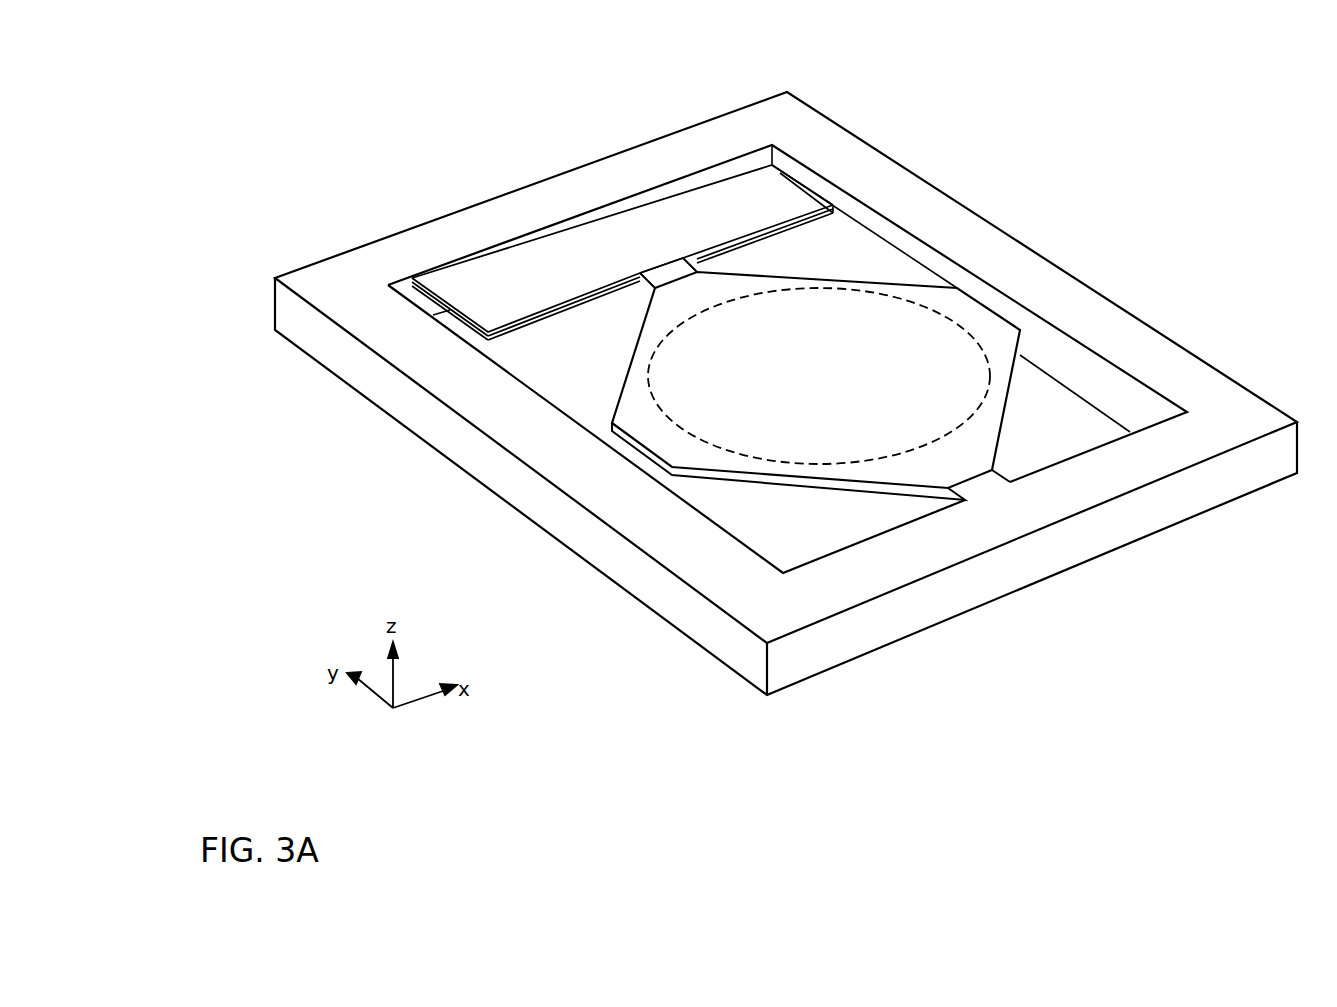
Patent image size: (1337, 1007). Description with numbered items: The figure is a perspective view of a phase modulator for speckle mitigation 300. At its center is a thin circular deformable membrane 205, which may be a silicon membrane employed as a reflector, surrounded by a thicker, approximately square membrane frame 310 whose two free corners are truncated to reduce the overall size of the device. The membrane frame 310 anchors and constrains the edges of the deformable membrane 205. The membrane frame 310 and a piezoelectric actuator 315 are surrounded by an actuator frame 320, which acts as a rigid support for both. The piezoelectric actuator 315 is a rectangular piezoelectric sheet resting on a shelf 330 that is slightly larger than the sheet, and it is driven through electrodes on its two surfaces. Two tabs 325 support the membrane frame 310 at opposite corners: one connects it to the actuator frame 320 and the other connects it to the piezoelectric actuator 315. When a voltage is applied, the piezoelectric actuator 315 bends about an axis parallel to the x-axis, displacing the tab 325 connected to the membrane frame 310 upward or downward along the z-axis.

The phase modulator for speckle mitigation 300 is at (786, 364).
The actuator frame 320 is at (488, 387).
The piezoelectric actuator 315 is at (718, 188).
The shelf 330 is at (773, 236).
The tabs 325 is at (665, 277).
The membrane frame 310 is at (642, 357).
The deformable membrane 205 is at (813, 378).